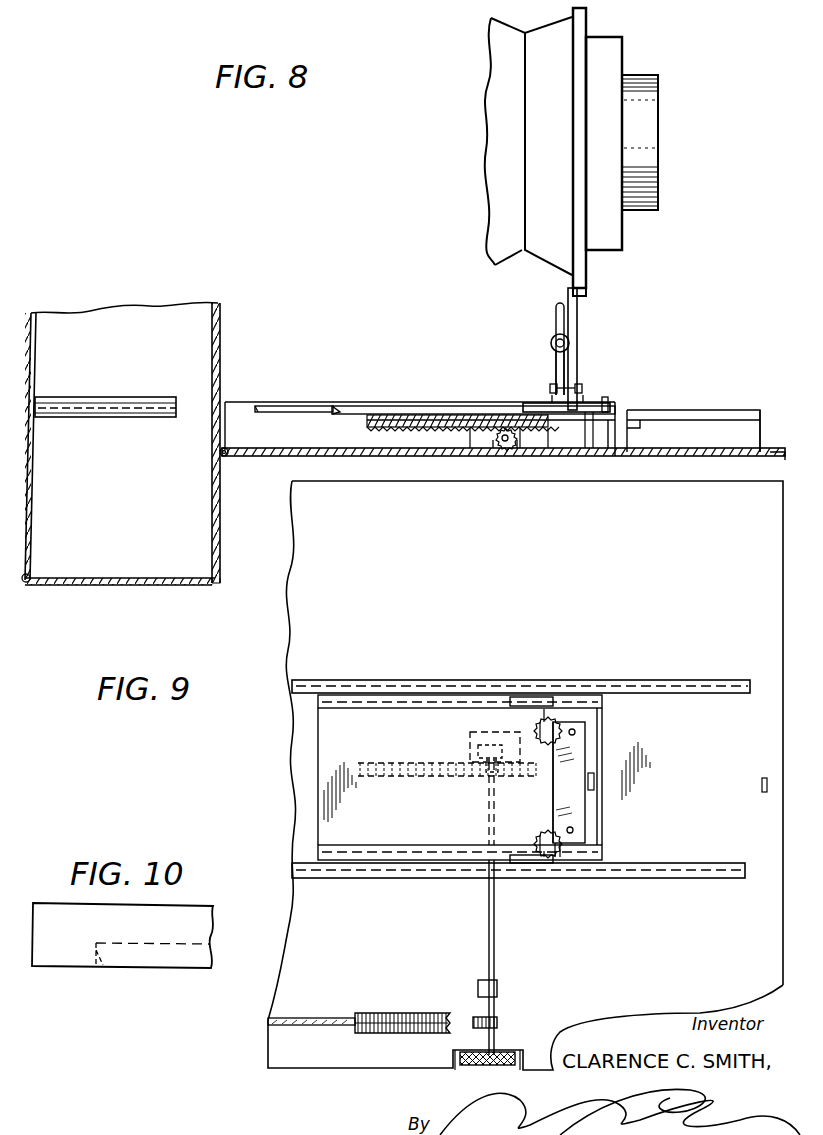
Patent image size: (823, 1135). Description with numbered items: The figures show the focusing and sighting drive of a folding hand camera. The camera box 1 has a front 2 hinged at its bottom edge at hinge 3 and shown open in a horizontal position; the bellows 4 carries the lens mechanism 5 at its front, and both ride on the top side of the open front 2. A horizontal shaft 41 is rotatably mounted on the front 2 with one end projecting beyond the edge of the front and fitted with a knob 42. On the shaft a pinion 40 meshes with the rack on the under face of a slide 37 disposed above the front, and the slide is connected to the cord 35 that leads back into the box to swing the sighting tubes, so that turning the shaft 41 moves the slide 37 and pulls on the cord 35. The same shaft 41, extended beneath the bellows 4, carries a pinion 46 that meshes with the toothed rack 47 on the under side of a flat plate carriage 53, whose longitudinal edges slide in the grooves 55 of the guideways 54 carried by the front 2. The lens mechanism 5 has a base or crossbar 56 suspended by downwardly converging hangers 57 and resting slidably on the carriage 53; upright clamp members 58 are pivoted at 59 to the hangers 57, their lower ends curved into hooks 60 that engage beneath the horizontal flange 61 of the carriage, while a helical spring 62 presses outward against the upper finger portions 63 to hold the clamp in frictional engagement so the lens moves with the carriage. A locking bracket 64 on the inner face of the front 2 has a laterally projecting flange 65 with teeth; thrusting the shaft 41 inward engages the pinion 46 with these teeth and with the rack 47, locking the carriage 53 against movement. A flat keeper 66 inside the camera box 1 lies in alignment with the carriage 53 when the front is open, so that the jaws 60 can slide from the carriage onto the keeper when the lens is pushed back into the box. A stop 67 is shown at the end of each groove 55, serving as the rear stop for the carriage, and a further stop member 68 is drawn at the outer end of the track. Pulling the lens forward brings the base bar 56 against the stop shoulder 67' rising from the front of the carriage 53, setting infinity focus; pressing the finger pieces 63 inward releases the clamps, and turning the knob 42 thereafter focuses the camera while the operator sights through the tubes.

In FIG. 8, the camera box 1 is at (118, 586).
In FIG. 8, the front of the camera box 2 is at (290, 457).
In FIG. 9, the front of the camera box 2 is at (362, 962).
In FIG. 8, the hinge 3 is at (226, 459).
In FIG. 8, the bellows 4 is at (508, 150).
In FIG. 8, the lens mechanism 5 is at (641, 88).
In FIG. 9, the cord 35 is at (313, 1024).
In FIG. 9, the slide 37 is at (385, 1016).
In FIG. 9, the pinion 40 is at (500, 1020).
In FIG. 8, the shaft 41 is at (510, 446).
In FIG. 9, the shaft 41 is at (495, 975).
In FIG. 9, the knob 42 is at (470, 1066).
In FIG. 8, the pinion 46 is at (492, 458).
In FIG. 9, the pinion 46 is at (490, 770).
In FIG. 8, the toothed rack 47 is at (430, 430).
In FIG. 9, the toothed rack 47 is at (382, 762).
In FIG. 8, the carriage 53 is at (355, 412).
In FIG. 9, the carriage 53 is at (330, 775).
In FIG. 8, the guideways 54 is at (308, 435).
In FIG. 9, the guideways 54 is at (645, 690).
In FIG. 10, the guideways 54 is at (192, 928).
In FIG. 8, the longitudinal grooves 55 is at (281, 405).
In FIG. 10, the longitudinal grooves 55 is at (160, 957).
In FIG. 8, the base or crossbar 56 is at (589, 413).
In FIG. 9, the base or crossbar 56 is at (566, 785).
In FIG. 8, the hangers or brackets 57 is at (580, 316).
In FIG. 9, the hangers or brackets 57 is at (594, 792).
In FIG. 8, the clamp members 58 is at (555, 361).
In FIG. 9, the clamp members 58 is at (546, 838).
In FIG. 8, the pivot 59 is at (579, 389).
In FIG. 9, the pivot 59 is at (567, 728).
In FIG. 8, the hook 60 is at (535, 403).
In FIG. 9, the hook 60 is at (532, 698).
In FIG. 8, the horizontal flange 61 is at (418, 407).
In FIG. 9, the horizontal flange 61 is at (433, 706).
In FIG. 8, the helical spring 62 is at (551, 343).
In FIG. 8, the finger portions 63 is at (556, 311).
In FIG. 8, the locking bracket 64 is at (475, 450).
In FIG. 9, the locking bracket 64 is at (486, 733).
In FIG. 9, the laterally projecting flange 65 is at (476, 751).
In FIG. 8, the keeper 66 is at (127, 405).
In FIG. 8, the stop lug 67 is at (256, 388).
In FIG. 9, the stop lug 67 is at (634, 800).
In FIG. 10, the stop lug 67 is at (120, 979).
In FIG. 8, the stop shoulder 67' is at (636, 389).
In FIG. 8, the stop clip 68 is at (773, 452).
In FIG. 9, the stop clip 68 is at (762, 791).